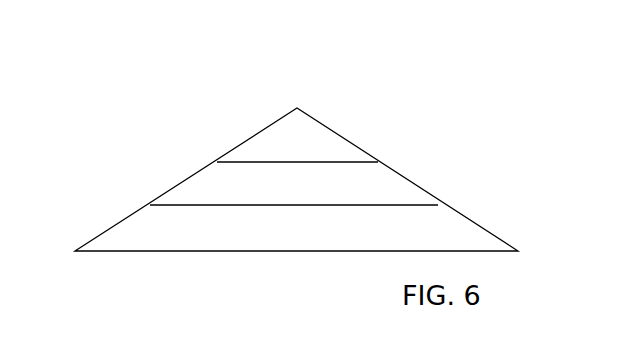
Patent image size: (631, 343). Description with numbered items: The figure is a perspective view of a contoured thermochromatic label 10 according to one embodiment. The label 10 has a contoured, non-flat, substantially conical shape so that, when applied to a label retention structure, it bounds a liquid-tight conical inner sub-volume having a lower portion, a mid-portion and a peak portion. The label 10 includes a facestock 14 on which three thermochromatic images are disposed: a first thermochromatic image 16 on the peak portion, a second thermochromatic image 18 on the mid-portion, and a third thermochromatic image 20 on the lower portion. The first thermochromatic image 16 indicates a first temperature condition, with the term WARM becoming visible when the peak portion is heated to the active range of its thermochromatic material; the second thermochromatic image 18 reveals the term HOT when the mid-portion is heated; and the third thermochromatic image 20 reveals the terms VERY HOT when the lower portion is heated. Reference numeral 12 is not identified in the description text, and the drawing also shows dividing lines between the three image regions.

The thermochromatic label 10 is at (184, 157).
The first dividing line 12 is at (368, 153).
The facestock 14 is at (437, 198).
The first thermochromatic image 16 is at (278, 125).
The second thermochromatic image 18 is at (255, 182).
The third thermochromatic image 20 is at (337, 232).